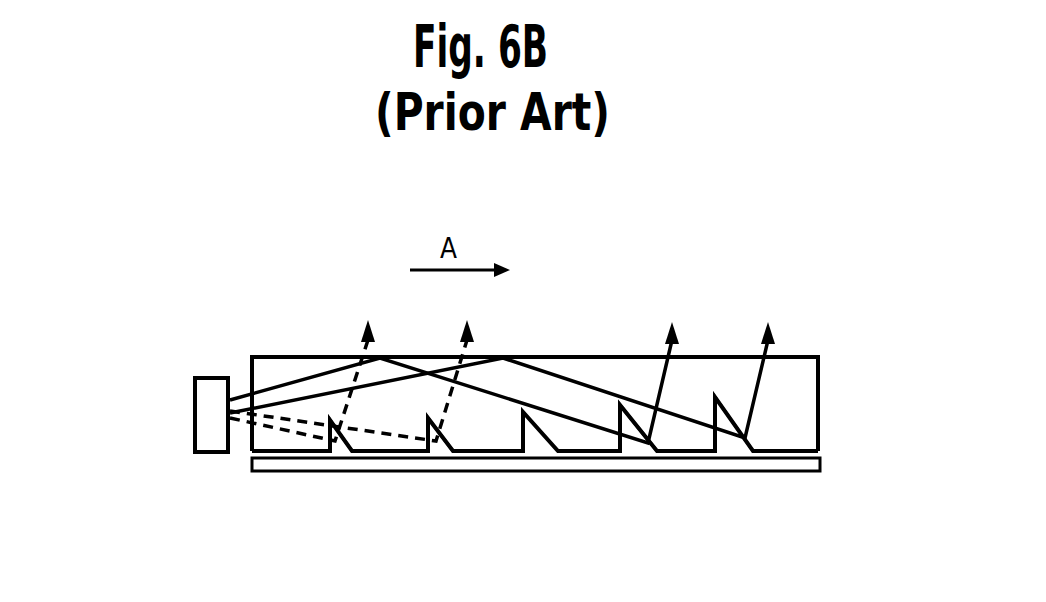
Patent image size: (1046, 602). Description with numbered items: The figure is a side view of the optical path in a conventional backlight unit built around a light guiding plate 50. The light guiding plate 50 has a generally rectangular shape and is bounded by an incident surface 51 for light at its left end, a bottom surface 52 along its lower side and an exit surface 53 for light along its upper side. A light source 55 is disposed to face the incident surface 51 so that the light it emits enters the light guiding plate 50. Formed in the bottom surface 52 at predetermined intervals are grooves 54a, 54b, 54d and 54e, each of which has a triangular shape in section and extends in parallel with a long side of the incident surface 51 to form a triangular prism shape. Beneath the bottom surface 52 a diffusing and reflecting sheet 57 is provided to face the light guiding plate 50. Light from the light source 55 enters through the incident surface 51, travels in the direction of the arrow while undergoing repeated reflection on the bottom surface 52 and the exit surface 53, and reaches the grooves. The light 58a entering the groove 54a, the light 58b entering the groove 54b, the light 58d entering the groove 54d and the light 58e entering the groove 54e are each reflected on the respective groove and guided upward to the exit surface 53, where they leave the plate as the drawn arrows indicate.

The light guiding plate 50 is at (715, 267).
The incident surface 51 is at (268, 368).
The bottom surface 52 is at (487, 453).
The exit surface 53 is at (312, 357).
The groove 54a is at (340, 442).
The groove 54b is at (437, 440).
The groove 54d is at (640, 447).
The groove 54e is at (725, 448).
The light source 55 is at (207, 420).
The diffusing and reflecting sheet 57 is at (570, 467).
The light 58a is at (287, 433).
The light 58b is at (390, 436).
The light 58d is at (410, 362).
The light 58e is at (560, 367).